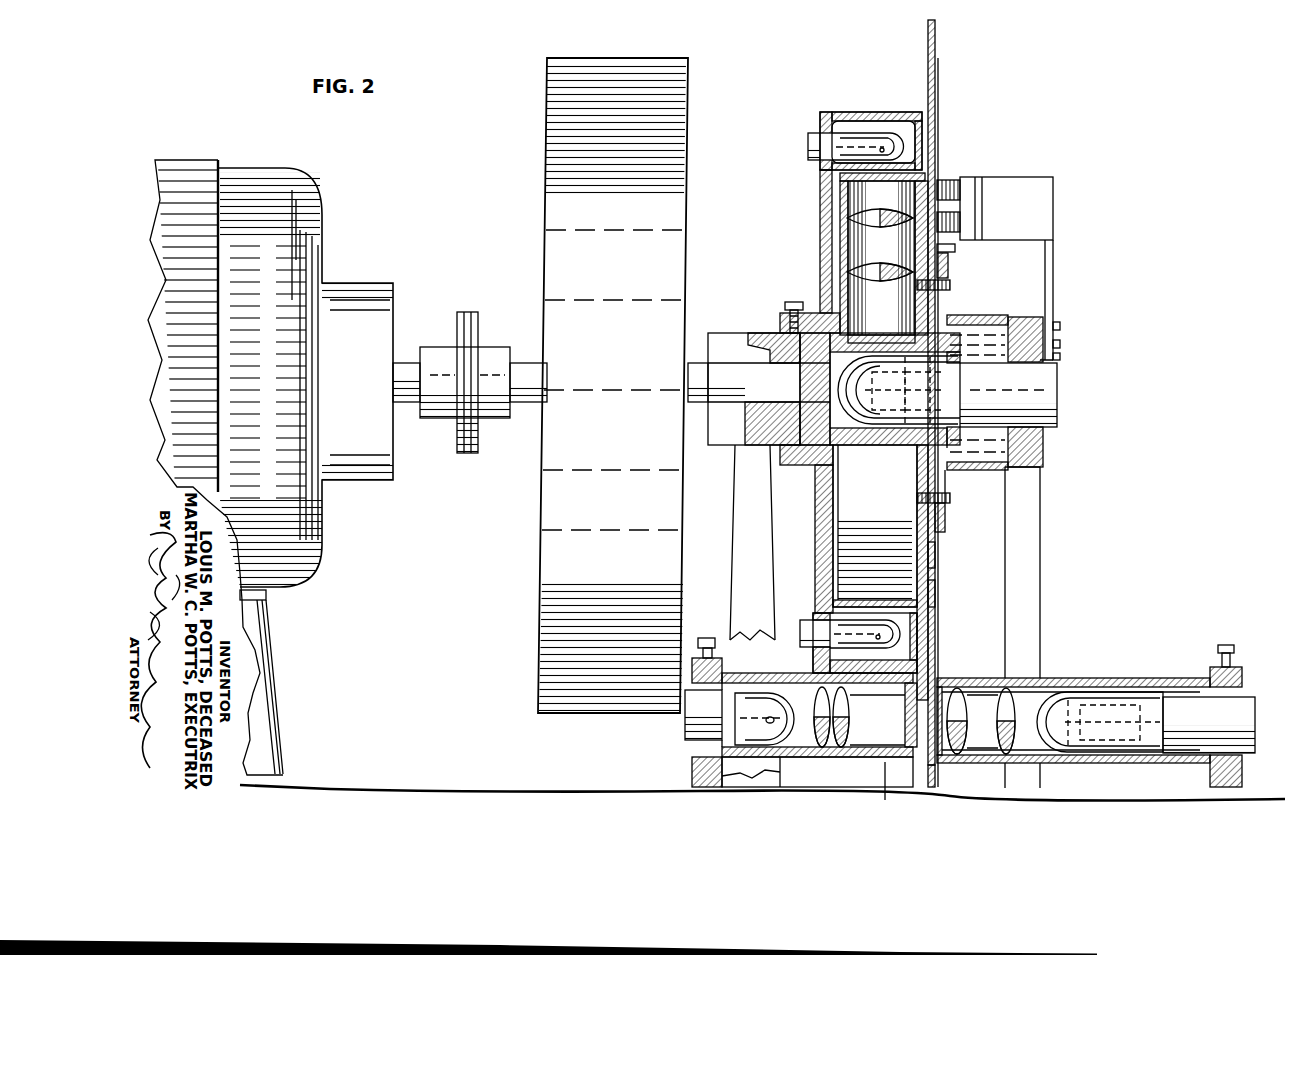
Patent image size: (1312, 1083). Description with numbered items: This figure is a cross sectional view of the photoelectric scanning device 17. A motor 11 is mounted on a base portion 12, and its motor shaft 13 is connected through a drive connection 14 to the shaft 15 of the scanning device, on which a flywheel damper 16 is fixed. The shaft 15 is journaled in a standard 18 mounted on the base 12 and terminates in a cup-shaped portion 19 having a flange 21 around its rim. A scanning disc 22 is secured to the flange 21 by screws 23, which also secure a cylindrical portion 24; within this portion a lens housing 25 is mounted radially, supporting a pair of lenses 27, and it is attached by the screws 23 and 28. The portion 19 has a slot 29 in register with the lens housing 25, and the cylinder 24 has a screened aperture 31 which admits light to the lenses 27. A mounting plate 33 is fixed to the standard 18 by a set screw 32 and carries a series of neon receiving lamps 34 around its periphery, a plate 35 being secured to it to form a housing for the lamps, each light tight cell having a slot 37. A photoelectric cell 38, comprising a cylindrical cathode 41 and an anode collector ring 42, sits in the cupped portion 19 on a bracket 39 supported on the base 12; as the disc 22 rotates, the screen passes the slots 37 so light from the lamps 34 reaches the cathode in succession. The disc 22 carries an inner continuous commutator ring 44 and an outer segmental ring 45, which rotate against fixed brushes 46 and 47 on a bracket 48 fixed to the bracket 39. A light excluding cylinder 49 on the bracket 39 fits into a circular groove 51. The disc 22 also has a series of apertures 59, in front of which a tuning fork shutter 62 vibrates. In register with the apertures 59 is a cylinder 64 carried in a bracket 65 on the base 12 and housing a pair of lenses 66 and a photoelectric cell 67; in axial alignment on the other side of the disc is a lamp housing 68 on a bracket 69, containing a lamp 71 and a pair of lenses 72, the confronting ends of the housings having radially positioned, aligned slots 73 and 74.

The motor 11 is at (302, 566).
The base portion 12 is at (275, 770).
The motor shaft 13 is at (405, 392).
The drive connection 14 is at (434, 345).
The shaft 15 is at (697, 378).
The flywheel damper 16 is at (548, 240).
The photoelectric scanning device 17 is at (806, 178).
The standard 18 is at (738, 473).
The cup-shaped portion 19 is at (852, 445).
The flange 21 is at (950, 265).
The scanning disc 22 is at (939, 128).
The screws 23 is at (952, 292).
The cylindrical portion 24 is at (830, 601).
The lens housing 25 is at (844, 202).
The lenses 27 is at (896, 226).
The screws 28 is at (955, 198).
The slot 29 is at (885, 338).
The aperture 31 is at (892, 178).
The set screw 32 is at (792, 302).
The mounting plate 33 is at (820, 250).
The neon receiving lamps 34 is at (830, 135).
The plate 35 is at (848, 112).
The slot 37 is at (842, 186).
The photoelectric cell 38 is at (957, 367).
The bracket 39 is at (1041, 500).
The cylindrical cathode 41 is at (912, 375).
The anode collector ring 42 is at (899, 390).
The inner continuous commutator ring 44 is at (940, 555).
The outer segmental commutator ring 45 is at (940, 595).
The brush 46 is at (955, 178).
The brush 47 is at (955, 228).
The bracket 48 is at (1050, 276).
The light excluding cylinder 49 is at (1002, 470).
The circular groove 51 is at (946, 500).
The apertures 59 is at (938, 60).
The shutter 62 is at (940, 777).
The cylinder 64 is at (1060, 680).
The bracket 65 is at (1242, 775).
The lenses 66 is at (1006, 688).
The photoelectric cell 67 is at (1120, 692).
The lamp housing 68 is at (880, 756).
The bracket 69 is at (690, 768).
The lamp 71 is at (766, 690).
The lenses 72 is at (832, 760).
The slot 73 is at (956, 690).
The slot 74 is at (900, 781).